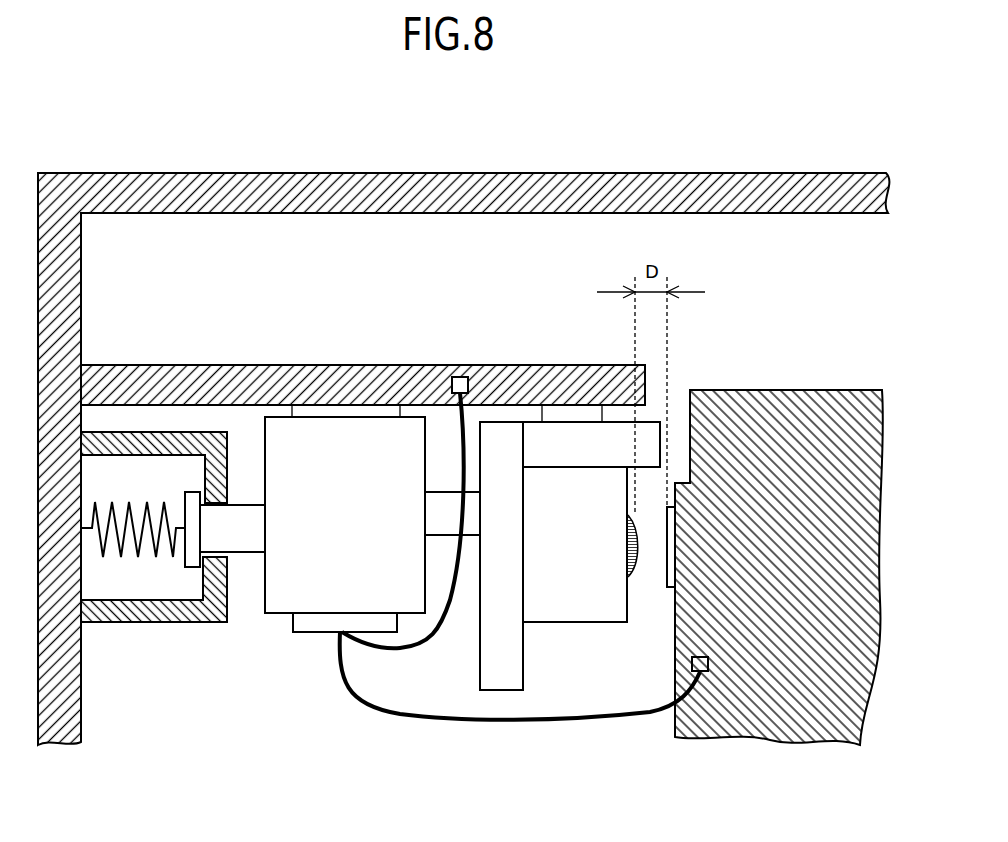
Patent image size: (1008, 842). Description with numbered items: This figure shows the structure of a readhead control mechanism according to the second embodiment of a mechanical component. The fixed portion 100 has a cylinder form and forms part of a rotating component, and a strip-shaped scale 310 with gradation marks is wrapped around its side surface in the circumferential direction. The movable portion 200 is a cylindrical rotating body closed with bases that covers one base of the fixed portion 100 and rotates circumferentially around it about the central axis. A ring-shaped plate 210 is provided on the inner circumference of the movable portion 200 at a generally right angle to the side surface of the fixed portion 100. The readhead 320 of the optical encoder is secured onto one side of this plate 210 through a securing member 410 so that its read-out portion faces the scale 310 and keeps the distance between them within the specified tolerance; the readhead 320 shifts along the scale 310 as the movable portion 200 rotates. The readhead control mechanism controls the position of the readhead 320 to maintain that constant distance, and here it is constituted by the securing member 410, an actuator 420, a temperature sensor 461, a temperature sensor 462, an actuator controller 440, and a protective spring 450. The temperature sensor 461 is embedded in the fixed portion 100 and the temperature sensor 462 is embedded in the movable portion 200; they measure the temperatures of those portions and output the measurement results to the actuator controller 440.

The fixed portion 100 is at (828, 740).
The movable portion 200 is at (160, 173).
The plate 210 is at (285, 365).
The scale 310 is at (755, 390).
The readhead 320 is at (553, 467).
The securing member 410 is at (510, 690).
The actuator 420 is at (277, 613).
The actuator controller 440 is at (323, 632).
The protective spring 450 is at (140, 557).
The temperature sensor 461 is at (700, 672).
The temperature sensor 462 is at (463, 377).